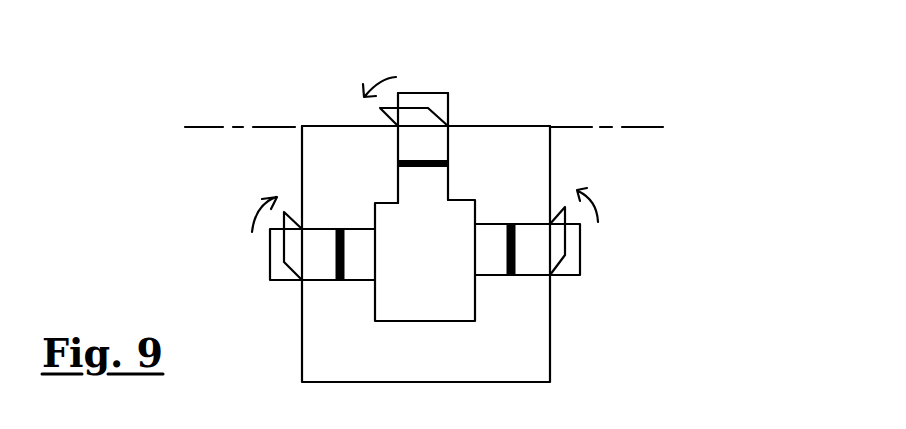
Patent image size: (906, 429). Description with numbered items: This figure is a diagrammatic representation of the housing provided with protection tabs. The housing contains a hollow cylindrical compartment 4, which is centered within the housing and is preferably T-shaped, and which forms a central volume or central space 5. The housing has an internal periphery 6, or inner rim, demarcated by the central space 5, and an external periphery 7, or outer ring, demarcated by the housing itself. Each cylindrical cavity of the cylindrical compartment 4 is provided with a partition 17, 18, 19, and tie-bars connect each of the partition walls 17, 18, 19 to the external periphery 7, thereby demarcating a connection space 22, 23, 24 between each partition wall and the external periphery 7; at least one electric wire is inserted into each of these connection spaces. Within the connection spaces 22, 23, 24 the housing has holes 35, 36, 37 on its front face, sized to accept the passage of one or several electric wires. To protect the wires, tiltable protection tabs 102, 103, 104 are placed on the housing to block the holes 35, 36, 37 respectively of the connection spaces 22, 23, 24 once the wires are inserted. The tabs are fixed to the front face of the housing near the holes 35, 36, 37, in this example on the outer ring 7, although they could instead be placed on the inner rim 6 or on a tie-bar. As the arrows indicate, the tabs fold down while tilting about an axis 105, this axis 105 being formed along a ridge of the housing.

The cylindrical compartment 4 is at (551, 147).
The central space 5 is at (418, 320).
The internal periphery 6 is at (466, 198).
The external periphery 7 is at (327, 127).
The partition 17 is at (423, 184).
The partition 18 is at (510, 265).
The partition 19 is at (346, 268).
The connection space 22 is at (449, 145).
The connection space 23 is at (530, 278).
The connection space 24 is at (322, 234).
The hole 35 is at (408, 146).
The hole 36 is at (530, 224).
The hole 37 is at (321, 284).
The tiltable protection tab 102 is at (425, 97).
The tiltable protection tab 103 is at (574, 258).
The tiltable protection tab 104 is at (270, 253).
The axis 105 is at (622, 125).